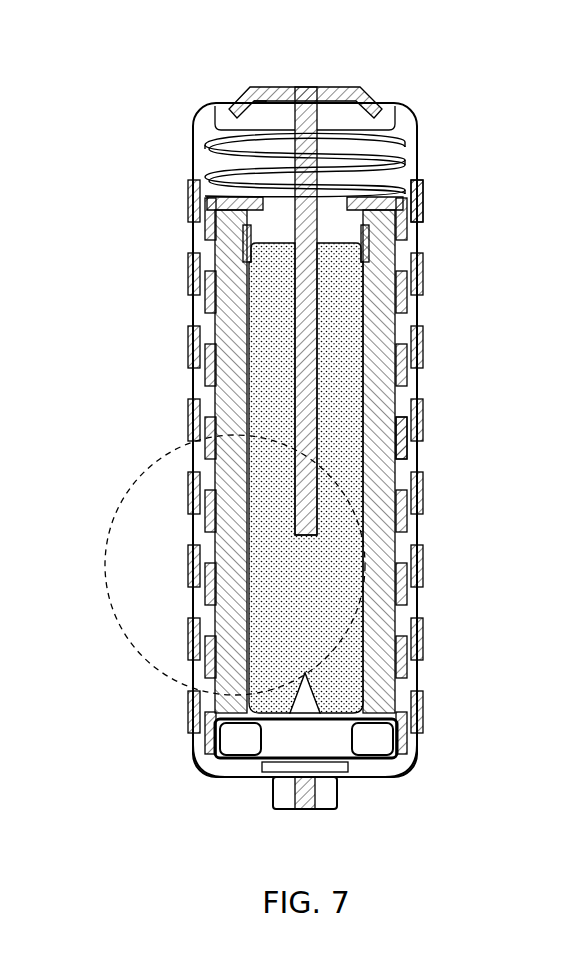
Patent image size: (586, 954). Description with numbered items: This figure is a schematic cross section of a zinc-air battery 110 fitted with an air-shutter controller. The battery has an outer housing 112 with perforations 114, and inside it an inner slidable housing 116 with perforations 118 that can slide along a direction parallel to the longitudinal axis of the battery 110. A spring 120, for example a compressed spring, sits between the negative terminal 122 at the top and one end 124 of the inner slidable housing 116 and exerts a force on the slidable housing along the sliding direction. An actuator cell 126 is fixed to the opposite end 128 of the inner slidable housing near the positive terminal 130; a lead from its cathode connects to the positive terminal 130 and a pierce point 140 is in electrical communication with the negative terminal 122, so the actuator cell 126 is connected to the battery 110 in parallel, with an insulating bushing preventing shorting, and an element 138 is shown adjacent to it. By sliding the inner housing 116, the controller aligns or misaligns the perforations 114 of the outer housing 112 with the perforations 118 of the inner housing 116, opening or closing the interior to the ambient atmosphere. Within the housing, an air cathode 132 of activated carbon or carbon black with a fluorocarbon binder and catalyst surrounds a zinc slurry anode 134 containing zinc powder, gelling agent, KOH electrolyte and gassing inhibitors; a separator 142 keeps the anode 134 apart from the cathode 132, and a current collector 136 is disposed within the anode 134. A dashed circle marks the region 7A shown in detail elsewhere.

The zinc-air battery 110 is at (170, 48).
The outer housing 112 is at (417, 208).
The perforations 114 is at (417, 240).
The inner slidable housing 116 is at (408, 312).
The perforations 118 is at (405, 468).
The spring 120 is at (199, 176).
The negative terminal 122 is at (305, 95).
The end of inner slidable housing 124 is at (420, 190).
The actuator cell 126 is at (335, 748).
The opposite end of inner slidable housing 128 is at (200, 747).
The positive terminal 130 is at (272, 800).
The air cathode 132 is at (223, 448).
The zinc slurry anode 134 is at (260, 416).
The current collector 136 is at (297, 362).
The seal 138 is at (382, 743).
The pierce point 140 is at (310, 678).
The separator 142 is at (375, 633).
The detail region 7A is at (115, 617).